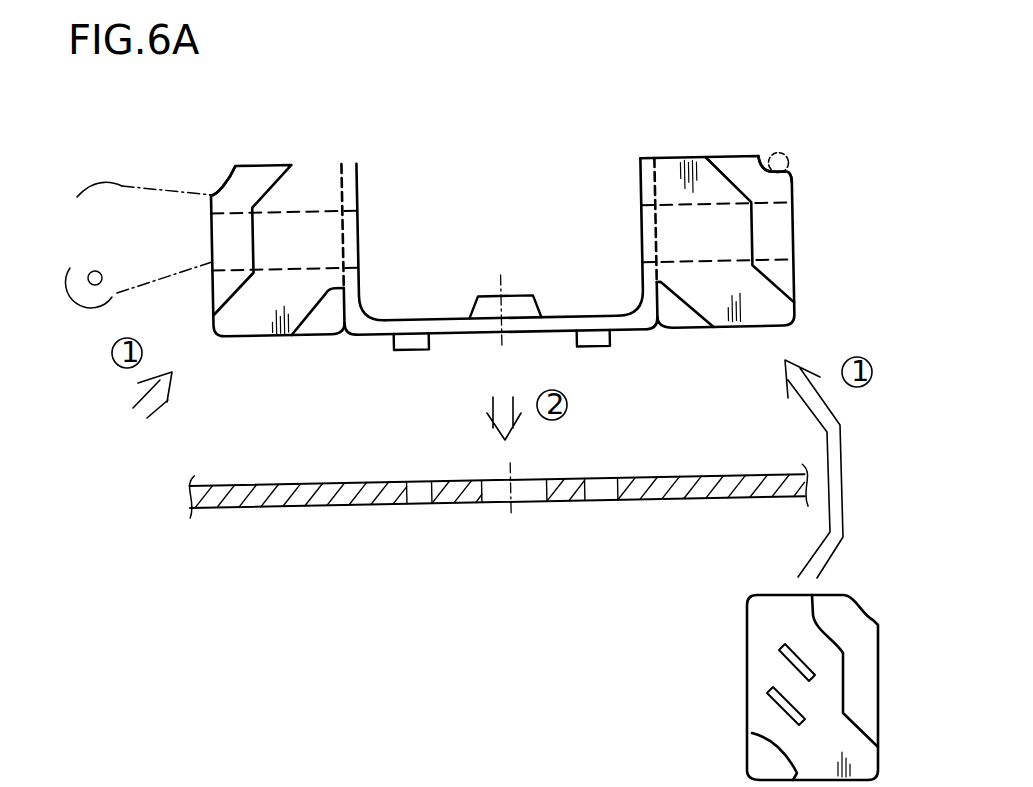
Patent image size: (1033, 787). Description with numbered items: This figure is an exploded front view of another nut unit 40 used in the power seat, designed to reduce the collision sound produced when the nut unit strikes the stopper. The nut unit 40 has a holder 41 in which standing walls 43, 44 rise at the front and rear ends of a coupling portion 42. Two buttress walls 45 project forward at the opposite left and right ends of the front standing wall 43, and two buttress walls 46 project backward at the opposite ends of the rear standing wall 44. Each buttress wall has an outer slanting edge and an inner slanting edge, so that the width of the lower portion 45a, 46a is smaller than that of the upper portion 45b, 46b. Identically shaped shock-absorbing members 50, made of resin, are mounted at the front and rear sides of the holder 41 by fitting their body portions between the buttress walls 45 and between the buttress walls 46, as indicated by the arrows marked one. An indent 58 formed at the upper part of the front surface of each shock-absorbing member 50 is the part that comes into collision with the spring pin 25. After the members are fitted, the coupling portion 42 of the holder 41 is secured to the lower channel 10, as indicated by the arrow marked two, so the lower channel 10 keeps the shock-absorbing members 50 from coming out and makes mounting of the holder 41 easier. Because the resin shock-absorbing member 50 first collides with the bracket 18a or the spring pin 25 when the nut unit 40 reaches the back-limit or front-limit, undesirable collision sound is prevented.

The lower channel 10 is at (733, 497).
The bracket 18a is at (122, 178).
The spring pin 25 is at (793, 163).
The nut unit 40 is at (483, 100).
The holder 41 is at (495, 196).
The coupling portion 42 is at (557, 318).
The front standing wall 43 is at (640, 183).
The rear standing wall 44 is at (350, 225).
The front buttress wall 45 is at (693, 160).
The lower portion of front buttress wall 45a is at (755, 330).
The upper portion of front buttress wall 45b is at (660, 160).
The rear buttress wall 46 is at (327, 175).
The lower portion of rear buttress wall 46a is at (257, 337).
The upper portion of rear buttress wall 46b is at (340, 160).
The shock-absorbing member 50 is at (262, 167).
The indent 58 is at (233, 180).